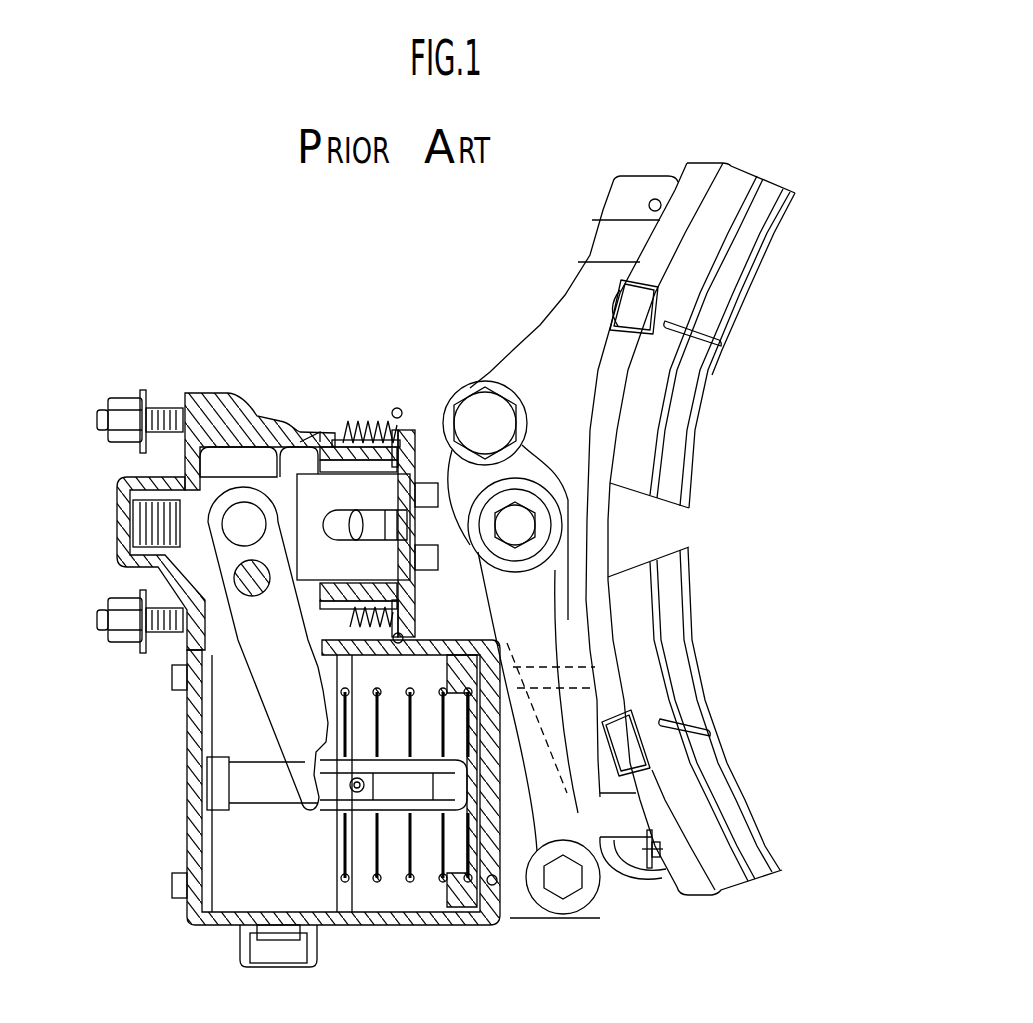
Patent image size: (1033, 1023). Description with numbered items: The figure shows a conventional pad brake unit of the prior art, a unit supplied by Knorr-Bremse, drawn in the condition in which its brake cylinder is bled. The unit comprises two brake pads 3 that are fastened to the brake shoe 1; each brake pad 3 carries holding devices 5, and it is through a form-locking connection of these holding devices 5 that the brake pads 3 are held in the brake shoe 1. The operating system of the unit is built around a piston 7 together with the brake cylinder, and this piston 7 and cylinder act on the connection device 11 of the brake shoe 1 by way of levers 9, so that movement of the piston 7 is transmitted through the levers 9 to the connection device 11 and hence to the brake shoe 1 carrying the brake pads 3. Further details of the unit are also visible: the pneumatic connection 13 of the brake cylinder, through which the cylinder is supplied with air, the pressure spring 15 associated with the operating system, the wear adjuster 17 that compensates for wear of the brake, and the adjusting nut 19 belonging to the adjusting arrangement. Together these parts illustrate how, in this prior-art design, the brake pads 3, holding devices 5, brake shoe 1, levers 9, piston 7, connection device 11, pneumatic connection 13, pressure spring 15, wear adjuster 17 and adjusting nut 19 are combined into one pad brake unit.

The brake shoe 1 is at (703, 183).
The brake pads 3 is at (668, 462).
The holding devices 5 is at (630, 733).
The piston 7 is at (467, 847).
The levers 9 is at (272, 690).
The connection device 11 is at (448, 548).
The pneumatic connection 13 is at (492, 886).
The pressure spring 15 is at (368, 885).
The wear adjuster 17 is at (143, 514).
The adjusting nut 19 is at (432, 487).